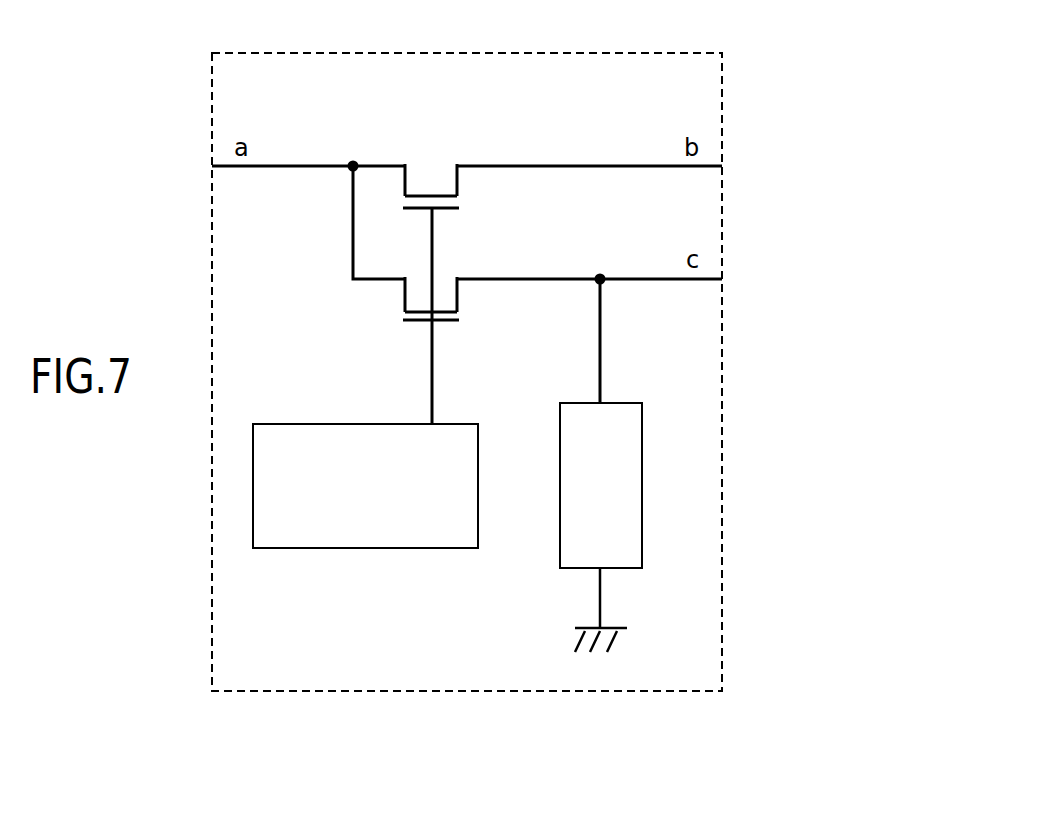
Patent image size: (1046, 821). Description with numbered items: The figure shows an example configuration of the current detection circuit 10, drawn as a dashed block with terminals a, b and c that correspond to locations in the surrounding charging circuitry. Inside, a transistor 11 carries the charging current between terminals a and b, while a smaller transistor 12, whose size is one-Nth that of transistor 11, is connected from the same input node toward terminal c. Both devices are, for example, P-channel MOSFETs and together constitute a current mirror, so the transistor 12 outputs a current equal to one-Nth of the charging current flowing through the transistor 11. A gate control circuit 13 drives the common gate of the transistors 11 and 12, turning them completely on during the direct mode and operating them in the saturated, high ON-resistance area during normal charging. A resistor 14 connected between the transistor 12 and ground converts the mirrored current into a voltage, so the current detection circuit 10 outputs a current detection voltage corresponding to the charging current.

The current detection circuit 10 is at (613, 53).
The transistor 11 is at (458, 188).
The transistor 12 is at (458, 302).
The gate control circuit 13 is at (362, 424).
The resistor 14 is at (622, 402).